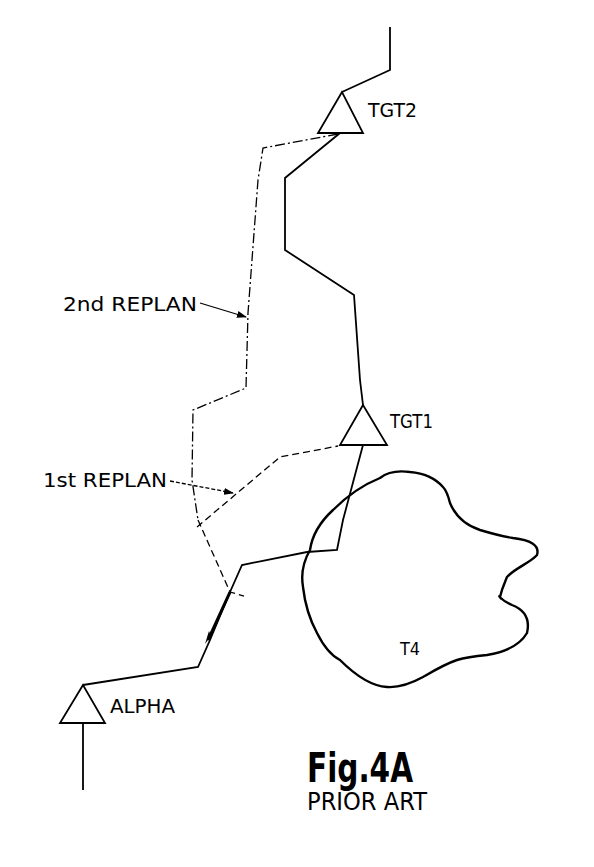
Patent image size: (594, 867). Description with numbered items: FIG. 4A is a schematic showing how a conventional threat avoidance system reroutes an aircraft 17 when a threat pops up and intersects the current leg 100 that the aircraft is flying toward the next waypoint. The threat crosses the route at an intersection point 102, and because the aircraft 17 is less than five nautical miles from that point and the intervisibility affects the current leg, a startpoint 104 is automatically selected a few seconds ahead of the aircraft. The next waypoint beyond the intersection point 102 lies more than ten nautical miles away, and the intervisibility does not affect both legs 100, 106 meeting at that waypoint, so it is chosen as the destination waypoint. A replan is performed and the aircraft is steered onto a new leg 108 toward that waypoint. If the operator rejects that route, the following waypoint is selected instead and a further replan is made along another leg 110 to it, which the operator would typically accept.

The current leg 100 is at (149, 672).
The intersection point 102 is at (305, 547).
The startpoint 104 is at (241, 594).
The leg 106 is at (362, 345).
The new leg 108 is at (294, 453).
The another leg 110 is at (217, 396).
The aircraft 17 is at (219, 613).